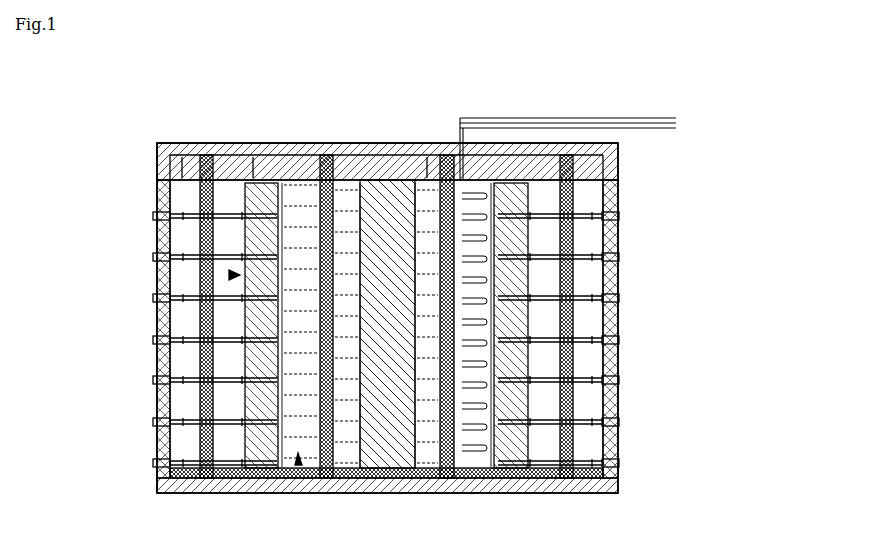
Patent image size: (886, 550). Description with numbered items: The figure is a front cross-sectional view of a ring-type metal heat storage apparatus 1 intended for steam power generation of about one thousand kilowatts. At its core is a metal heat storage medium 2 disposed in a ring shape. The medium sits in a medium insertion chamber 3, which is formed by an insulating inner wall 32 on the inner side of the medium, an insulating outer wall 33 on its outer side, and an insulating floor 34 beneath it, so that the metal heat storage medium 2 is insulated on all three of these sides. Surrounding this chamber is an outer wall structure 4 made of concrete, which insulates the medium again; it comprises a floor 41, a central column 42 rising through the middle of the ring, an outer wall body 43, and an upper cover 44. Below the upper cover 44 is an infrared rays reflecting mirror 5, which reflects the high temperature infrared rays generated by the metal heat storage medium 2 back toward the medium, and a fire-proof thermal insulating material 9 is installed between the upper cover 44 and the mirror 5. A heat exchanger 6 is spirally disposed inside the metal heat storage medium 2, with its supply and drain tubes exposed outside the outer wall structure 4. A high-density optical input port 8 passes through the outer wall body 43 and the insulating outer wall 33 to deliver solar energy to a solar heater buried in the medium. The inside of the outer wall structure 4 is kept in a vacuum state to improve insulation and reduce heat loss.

The metal heat storage apparatus 1 is at (112, 153).
The metal heat storage medium 2 is at (229, 275).
The medium insertion chamber 3 is at (300, 470).
The insulating inner wall 32 is at (343, 440).
The insulating outer wall 33 is at (217, 445).
The insulating floor 34 is at (463, 450).
The outer wall structure 4 is at (357, 95).
The floor 41 is at (600, 492).
The central column 42 is at (384, 160).
The outer wall body 43 is at (617, 440).
The upper cover 44 is at (310, 152).
The infrared rays reflecting mirror 5 is at (183, 178).
The heat exchanger 6 is at (660, 140).
The high-density optical input port 8 is at (589, 224).
The fire-proof thermal insulating material 9 is at (182, 178).